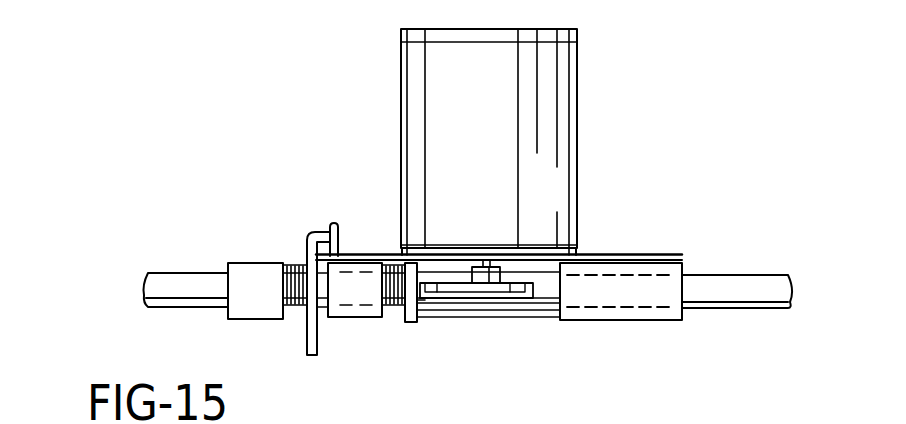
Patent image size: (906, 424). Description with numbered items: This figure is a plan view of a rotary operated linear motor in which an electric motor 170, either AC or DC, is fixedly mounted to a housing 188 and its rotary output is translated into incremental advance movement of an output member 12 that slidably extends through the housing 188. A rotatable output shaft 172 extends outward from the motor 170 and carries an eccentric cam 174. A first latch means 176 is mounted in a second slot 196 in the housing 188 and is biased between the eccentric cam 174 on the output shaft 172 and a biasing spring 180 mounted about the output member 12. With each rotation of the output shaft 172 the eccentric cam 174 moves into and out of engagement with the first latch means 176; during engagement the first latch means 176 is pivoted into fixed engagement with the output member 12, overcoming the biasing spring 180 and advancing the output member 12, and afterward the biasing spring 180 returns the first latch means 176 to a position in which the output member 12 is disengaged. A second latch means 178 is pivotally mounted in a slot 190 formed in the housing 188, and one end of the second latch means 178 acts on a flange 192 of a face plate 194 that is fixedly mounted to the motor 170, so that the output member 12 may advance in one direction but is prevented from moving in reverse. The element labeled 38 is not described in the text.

The output member 12 is at (740, 282).
The frame 38 is at (690, 420).
The electric motor 170 is at (403, 68).
The output shaft 172 is at (493, 300).
The eccentric cam 174 is at (540, 305).
The first latch means 176 is at (417, 300).
The second latch means 178 is at (322, 338).
The biasing spring 180 is at (400, 322).
The housing 188 is at (245, 272).
The slot 190 is at (293, 263).
The flange 192 is at (340, 222).
The face plate 194 is at (369, 254).
The second slot 196 is at (560, 288).